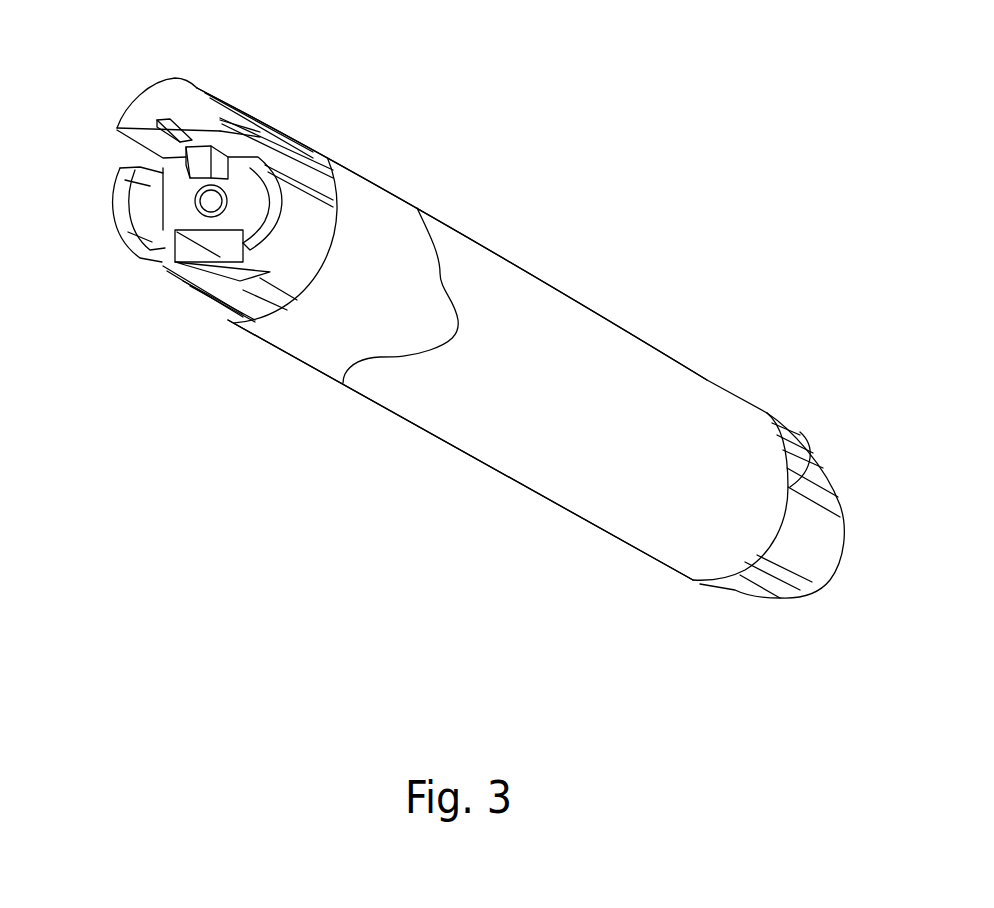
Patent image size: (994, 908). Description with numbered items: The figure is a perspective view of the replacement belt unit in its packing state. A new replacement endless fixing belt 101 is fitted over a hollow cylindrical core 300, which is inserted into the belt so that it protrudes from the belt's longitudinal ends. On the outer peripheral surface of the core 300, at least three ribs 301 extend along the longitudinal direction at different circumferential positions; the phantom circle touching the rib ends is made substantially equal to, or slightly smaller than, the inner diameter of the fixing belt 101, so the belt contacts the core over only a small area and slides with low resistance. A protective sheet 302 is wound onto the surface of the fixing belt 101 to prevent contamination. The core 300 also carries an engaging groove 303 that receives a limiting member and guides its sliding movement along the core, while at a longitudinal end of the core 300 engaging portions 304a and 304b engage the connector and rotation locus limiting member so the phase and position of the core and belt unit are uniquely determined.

The fixing belt 101 is at (367, 208).
The core 300 is at (213, 259).
The rib 301 is at (837, 567).
The protective sheet 302 is at (533, 315).
The engaging groove 303 is at (787, 470).
The engaging portion 304a is at (207, 210).
The engaging portion 304b is at (207, 165).